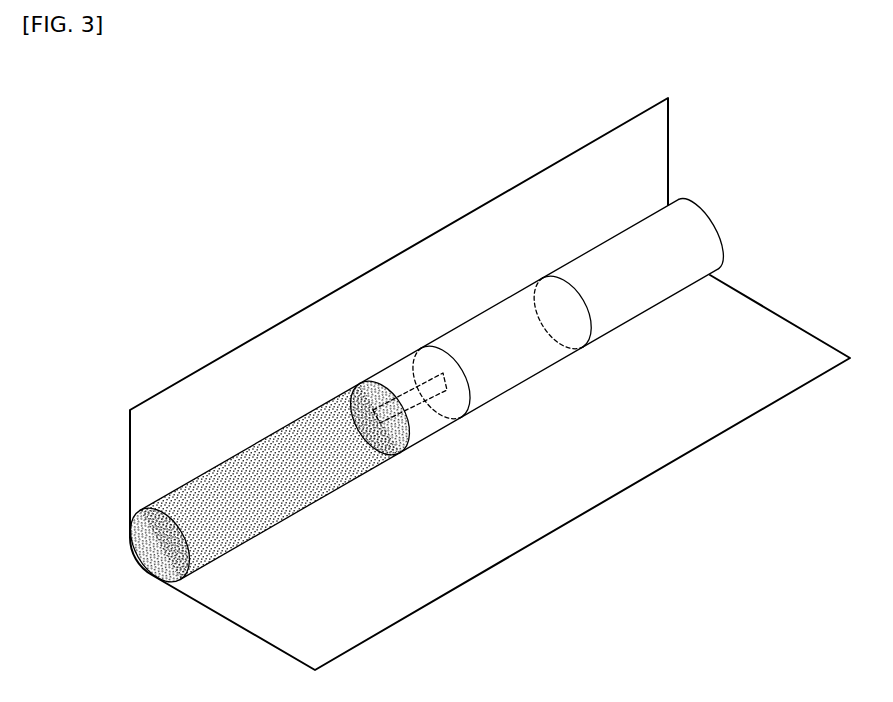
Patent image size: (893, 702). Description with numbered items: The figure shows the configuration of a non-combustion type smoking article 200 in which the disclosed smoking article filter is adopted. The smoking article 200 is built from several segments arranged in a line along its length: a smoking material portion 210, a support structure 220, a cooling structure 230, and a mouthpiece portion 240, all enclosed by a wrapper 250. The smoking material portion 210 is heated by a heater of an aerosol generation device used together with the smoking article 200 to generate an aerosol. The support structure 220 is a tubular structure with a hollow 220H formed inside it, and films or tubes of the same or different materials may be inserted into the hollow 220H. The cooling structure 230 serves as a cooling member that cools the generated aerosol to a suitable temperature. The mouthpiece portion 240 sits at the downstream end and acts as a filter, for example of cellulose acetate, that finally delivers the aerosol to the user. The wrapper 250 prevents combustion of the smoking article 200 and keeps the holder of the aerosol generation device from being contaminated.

The smoking article 200 is at (192, 110).
The smoking material portion 210 is at (250, 472).
The support structure 220 is at (398, 370).
The hollow 220H is at (428, 422).
The cooling structure 230 is at (480, 330).
The mouthpiece portion 240 is at (608, 255).
The wrapper 250 is at (638, 468).